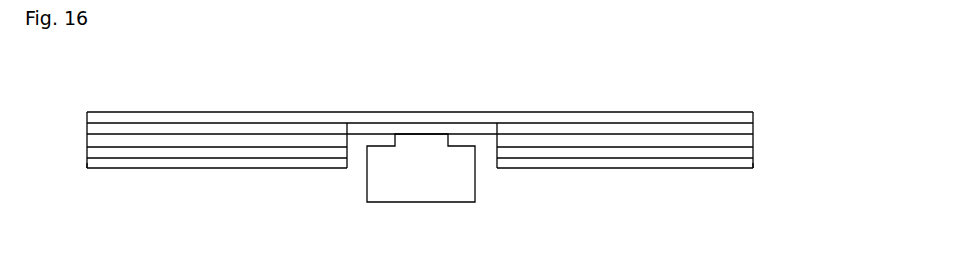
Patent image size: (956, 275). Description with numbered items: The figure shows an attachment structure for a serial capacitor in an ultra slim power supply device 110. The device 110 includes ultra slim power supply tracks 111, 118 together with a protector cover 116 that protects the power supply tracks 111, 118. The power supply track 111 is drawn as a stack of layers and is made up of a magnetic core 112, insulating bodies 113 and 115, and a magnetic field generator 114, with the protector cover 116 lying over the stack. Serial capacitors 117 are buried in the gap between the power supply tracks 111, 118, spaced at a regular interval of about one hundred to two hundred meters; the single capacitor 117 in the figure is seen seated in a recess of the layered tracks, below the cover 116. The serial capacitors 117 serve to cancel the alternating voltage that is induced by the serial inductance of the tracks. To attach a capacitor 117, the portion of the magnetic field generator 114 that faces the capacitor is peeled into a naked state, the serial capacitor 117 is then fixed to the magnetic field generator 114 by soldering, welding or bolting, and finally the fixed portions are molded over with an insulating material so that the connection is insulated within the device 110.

The ultra slim power supply device 110 is at (110, 100).
The power supply track 111 is at (826, 108).
The magnetic core 112 is at (753, 163).
The insulating body 113 is at (753, 152).
The magnetic field generator 114 is at (753, 139).
The insulating body 115 is at (753, 129).
The protector cover 116 is at (753, 118).
The serial capacitor 117 is at (420, 202).
The power supply track 118 is at (82, 123).